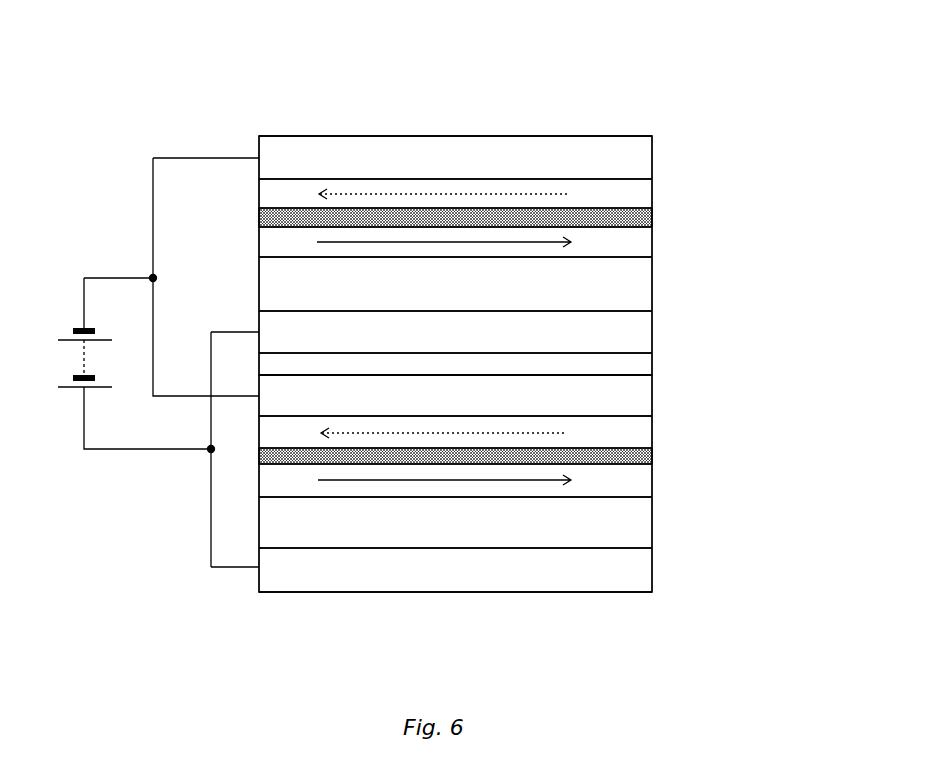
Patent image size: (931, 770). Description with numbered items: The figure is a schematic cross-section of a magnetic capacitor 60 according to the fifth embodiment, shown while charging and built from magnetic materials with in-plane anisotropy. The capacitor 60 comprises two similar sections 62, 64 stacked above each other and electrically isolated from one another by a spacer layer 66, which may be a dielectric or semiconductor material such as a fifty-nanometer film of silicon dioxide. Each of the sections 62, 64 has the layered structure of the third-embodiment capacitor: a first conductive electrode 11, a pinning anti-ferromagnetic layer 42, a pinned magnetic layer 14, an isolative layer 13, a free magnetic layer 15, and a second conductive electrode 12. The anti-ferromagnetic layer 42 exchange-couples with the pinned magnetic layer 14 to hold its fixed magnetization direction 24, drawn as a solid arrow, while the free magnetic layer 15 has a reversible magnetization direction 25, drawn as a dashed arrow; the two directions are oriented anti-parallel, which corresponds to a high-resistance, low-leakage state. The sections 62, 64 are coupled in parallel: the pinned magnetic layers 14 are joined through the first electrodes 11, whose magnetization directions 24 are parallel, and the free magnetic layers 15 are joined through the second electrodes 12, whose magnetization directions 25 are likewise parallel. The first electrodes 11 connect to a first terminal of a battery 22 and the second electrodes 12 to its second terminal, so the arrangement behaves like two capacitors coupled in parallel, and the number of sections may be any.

The magnetic capacitor 60 is at (684, 96).
The section 64 is at (752, 134).
The section 62 is at (752, 373).
The second conductive electrode 12 is at (652, 148).
The free magnetic layer 15 is at (652, 185).
The isolative layer 13 is at (652, 218).
The pinned magnetic layer 14 is at (652, 247).
The pinning anti-ferromagnetic layer 42 is at (652, 288).
The first conductive electrode 11 is at (652, 327).
The spacer layer 66 is at (652, 360).
The reversible magnetization direction 25 is at (449, 194).
The fixed magnetization direction 24 is at (450, 481).
The battery 22 is at (73, 326).